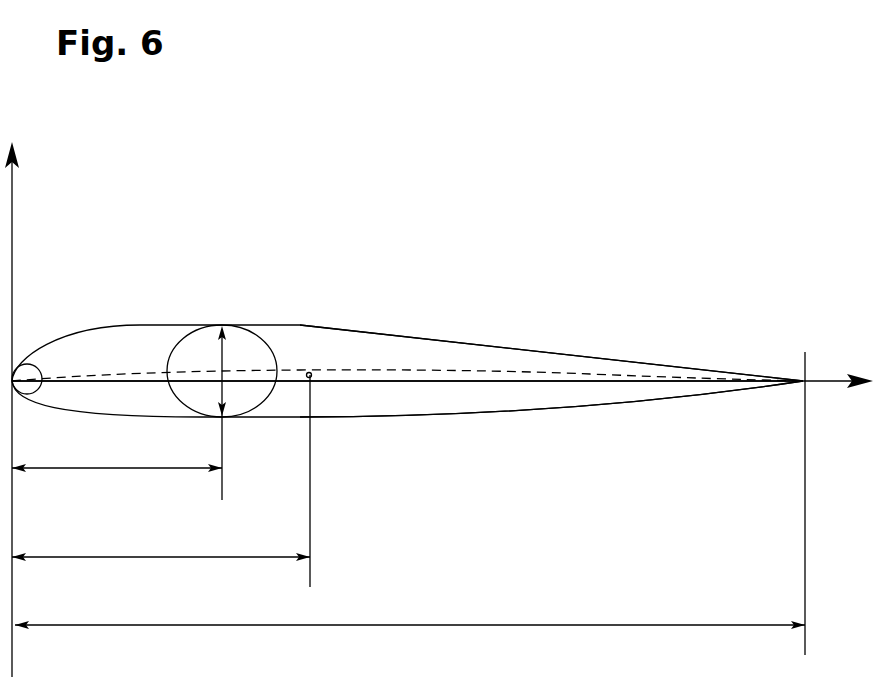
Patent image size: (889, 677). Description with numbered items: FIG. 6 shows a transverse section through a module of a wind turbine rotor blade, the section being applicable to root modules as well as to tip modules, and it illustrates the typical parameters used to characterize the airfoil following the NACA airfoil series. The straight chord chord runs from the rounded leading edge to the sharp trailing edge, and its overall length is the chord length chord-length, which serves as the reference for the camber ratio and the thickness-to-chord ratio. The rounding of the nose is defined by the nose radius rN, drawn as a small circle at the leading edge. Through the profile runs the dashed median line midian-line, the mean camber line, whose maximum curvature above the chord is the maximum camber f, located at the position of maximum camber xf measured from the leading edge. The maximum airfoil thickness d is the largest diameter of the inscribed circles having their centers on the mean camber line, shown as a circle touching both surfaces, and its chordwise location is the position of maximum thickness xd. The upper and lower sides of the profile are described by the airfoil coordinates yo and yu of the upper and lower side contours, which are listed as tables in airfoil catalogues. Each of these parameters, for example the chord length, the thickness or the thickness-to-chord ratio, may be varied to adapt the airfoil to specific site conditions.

The nose radius rN is at (33, 378).
The maximum airfoil thickness d is at (223, 358).
The maximum camber f is at (310, 374).
The position of maximum thickness xd is at (117, 487).
The position of maximum camber xf is at (161, 575).
The element chord is at (407, 395).
The chord length chord-length is at (410, 605).
The median line midian-line is at (407, 357).
The upper side contour coordinates yo is at (551, 327).
The lower side contour coordinates yu is at (551, 428).